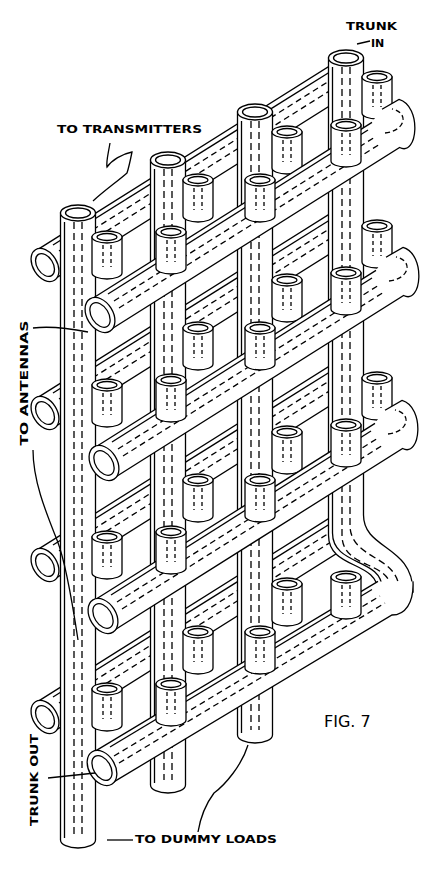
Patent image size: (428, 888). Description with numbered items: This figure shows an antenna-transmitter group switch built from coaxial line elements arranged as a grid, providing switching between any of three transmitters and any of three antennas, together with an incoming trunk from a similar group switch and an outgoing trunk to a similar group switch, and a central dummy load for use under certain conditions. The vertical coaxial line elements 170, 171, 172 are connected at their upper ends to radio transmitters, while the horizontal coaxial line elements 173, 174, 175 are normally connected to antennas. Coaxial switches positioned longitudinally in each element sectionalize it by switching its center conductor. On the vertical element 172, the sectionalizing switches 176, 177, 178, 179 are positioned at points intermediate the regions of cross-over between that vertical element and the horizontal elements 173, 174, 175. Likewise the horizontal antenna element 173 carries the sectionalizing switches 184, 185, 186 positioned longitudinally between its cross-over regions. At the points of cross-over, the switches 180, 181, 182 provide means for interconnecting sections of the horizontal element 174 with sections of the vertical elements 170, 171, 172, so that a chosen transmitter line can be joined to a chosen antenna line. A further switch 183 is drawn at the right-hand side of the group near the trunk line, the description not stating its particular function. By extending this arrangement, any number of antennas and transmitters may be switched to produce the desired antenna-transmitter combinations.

The coaxial line element 170 is at (63, 212).
The coaxial line element 171 is at (158, 159).
The coaxial line element 172 is at (243, 108).
The coaxial line element 173 is at (86, 317).
The coaxial line element 174 is at (90, 464).
The coaxial line element 175 is at (88, 620).
The sectionalizing switch 176 is at (274, 148).
The sectionalizing switch 177 is at (250, 320).
The sectionalizing switch 178 is at (247, 472).
The sectionalizing switch 179 is at (250, 626).
The switch 180 is at (105, 378).
The switch 181 is at (198, 322).
The switch 182 is at (283, 274).
The hybrid junction 183 is at (371, 216).
The sectionalizing switch 184 is at (164, 255).
The sectionalizing switch 185 is at (190, 174).
The sectionalizing switch 186 is at (340, 152).